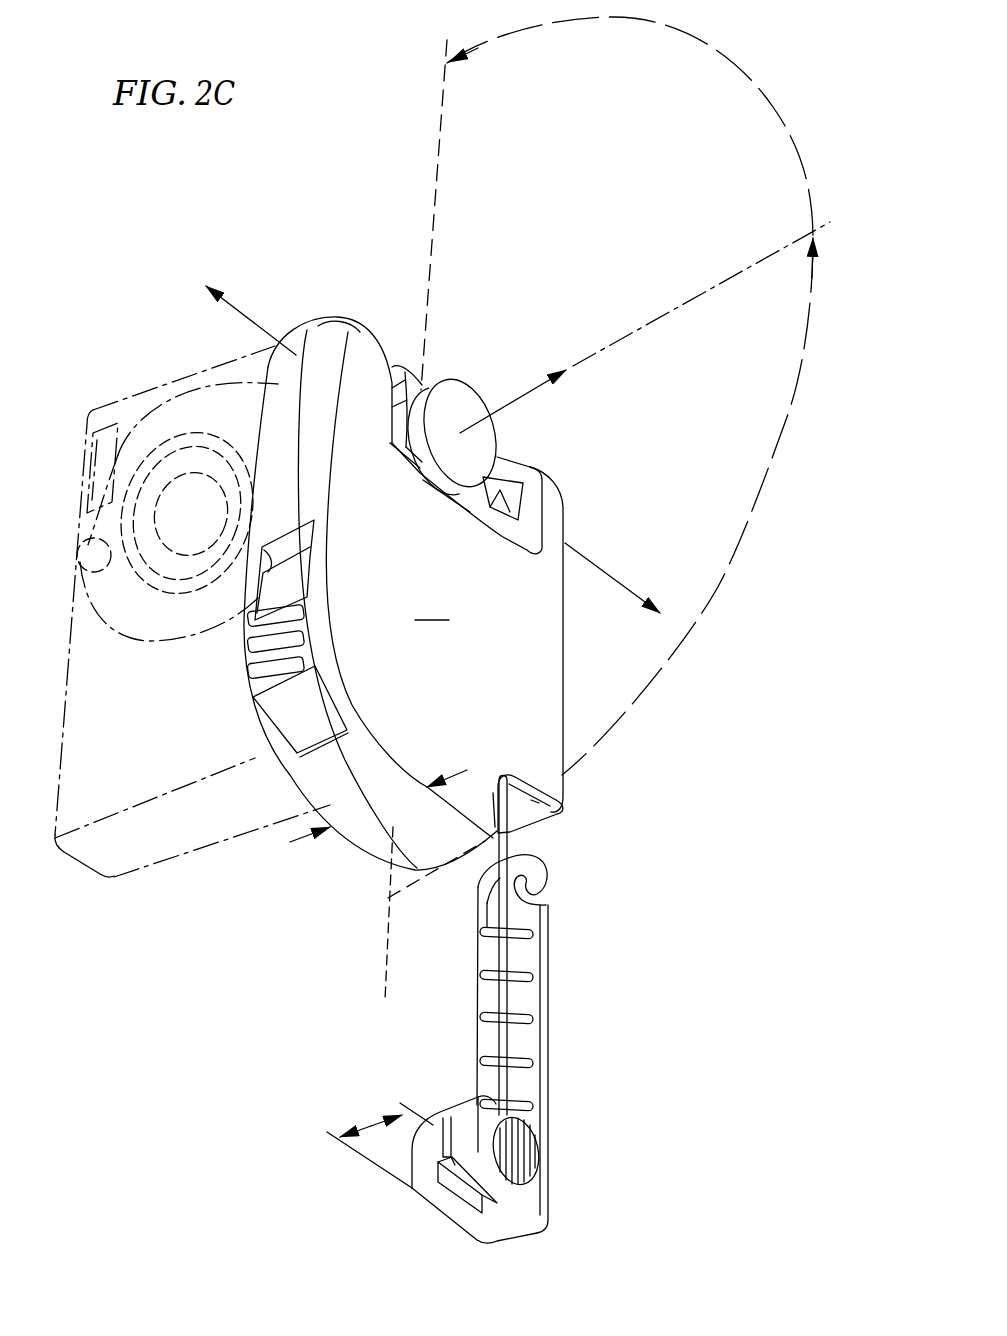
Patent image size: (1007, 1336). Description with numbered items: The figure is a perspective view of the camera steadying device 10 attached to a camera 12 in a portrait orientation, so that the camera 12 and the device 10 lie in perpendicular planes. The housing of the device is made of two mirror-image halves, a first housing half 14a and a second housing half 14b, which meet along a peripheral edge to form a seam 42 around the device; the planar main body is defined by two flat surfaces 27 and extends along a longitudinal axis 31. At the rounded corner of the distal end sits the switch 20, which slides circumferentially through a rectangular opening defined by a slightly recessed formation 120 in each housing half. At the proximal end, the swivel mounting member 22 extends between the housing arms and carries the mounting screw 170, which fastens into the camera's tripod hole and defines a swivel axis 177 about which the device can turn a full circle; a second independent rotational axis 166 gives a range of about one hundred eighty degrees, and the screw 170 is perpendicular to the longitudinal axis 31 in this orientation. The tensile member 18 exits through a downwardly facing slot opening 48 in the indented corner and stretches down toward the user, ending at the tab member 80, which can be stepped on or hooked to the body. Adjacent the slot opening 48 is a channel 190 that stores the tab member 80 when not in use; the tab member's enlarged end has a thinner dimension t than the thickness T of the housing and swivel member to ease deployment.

The camera steadying device 10 is at (600, 527).
The camera 12 is at (149, 400).
The first housing half 14a is at (285, 388).
The second housing half 14b is at (332, 341).
The tensile member 18 is at (500, 1018).
The switch 20 is at (303, 716).
The swivel mounting member 22 is at (402, 380).
The flat surface 27 is at (432, 607).
The longitudinal axis 31 is at (387, 922).
The seam 42 is at (291, 434).
The slot opening 48 is at (524, 812).
The tab member 80 is at (548, 1162).
The recessed formation 120 is at (264, 547).
The rotational axis 166 is at (600, 566).
The mounting screw 170 is at (453, 397).
The second rotational or swivel axis 177 is at (505, 404).
The channel 190 is at (537, 810).
The thickness T is at (371, 817).
The thinner dimension t is at (380, 1143).